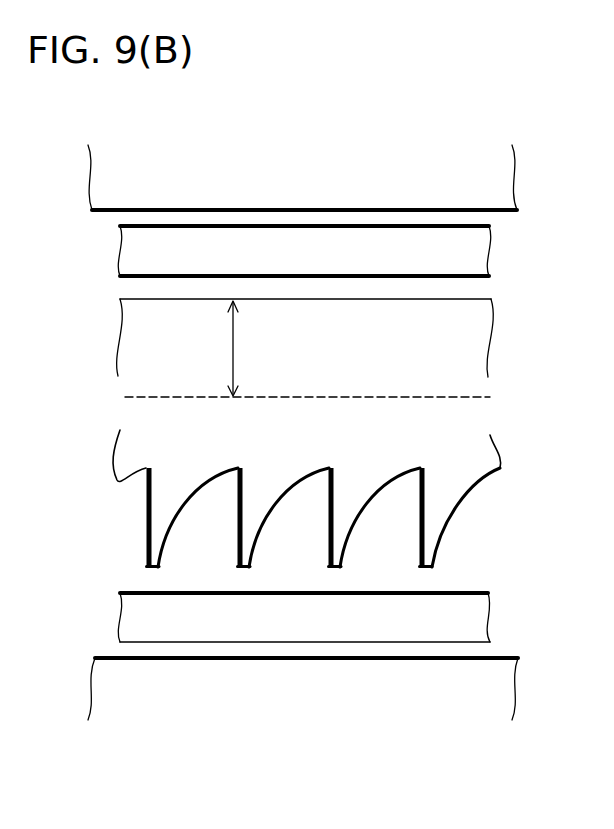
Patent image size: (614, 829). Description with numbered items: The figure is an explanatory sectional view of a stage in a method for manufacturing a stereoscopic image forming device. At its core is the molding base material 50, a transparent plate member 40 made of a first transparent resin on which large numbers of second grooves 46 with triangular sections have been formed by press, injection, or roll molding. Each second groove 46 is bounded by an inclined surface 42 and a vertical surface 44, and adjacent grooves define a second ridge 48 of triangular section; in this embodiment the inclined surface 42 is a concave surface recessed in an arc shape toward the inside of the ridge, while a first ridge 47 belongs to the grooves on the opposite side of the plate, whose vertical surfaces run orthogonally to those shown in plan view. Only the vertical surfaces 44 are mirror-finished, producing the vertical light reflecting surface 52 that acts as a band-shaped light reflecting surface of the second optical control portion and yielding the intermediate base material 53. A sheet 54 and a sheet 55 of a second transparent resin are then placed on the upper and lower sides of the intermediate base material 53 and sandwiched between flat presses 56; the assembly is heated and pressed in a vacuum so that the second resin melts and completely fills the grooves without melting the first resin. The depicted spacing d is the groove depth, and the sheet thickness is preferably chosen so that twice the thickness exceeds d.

The transparent plate member 40 is at (255, 601).
The inclined surface 42 is at (267, 533).
The vertical surface 44 is at (330, 550).
The second groove 46 is at (302, 528).
The first ridge 47 is at (295, 322).
The second ridge 48 is at (343, 517).
The molding base material 50 is at (456, 345).
The vertical light reflecting surface 52 is at (238, 515).
The intermediate base material 53 is at (530, 310).
The sheet 54 is at (415, 252).
The sheet 55 is at (445, 630).
The flat press 56 is at (94, 213).